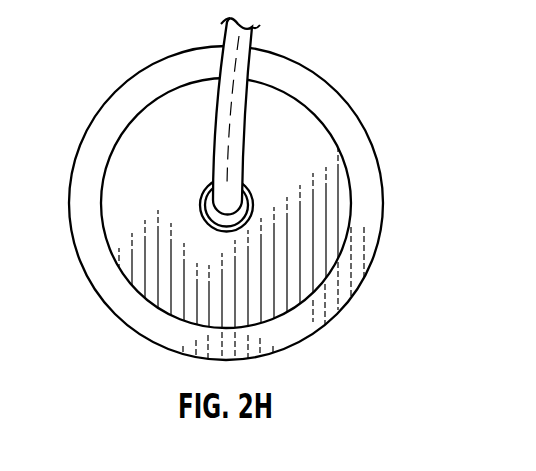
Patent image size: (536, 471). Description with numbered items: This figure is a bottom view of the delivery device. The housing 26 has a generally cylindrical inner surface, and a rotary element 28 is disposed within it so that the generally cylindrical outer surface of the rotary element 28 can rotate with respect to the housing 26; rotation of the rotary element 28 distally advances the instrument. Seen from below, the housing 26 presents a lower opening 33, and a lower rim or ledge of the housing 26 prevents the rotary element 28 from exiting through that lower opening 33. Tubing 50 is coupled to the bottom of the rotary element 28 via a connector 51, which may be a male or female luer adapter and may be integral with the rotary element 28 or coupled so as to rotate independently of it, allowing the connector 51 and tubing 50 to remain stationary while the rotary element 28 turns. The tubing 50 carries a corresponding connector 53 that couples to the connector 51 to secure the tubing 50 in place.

The housing 26 is at (370, 192).
The rotary element 28 is at (320, 168).
The lower opening 33 is at (320, 255).
The tubing 50 is at (247, 110).
The connector 51 is at (208, 187).
The corresponding connector 53 is at (211, 206).